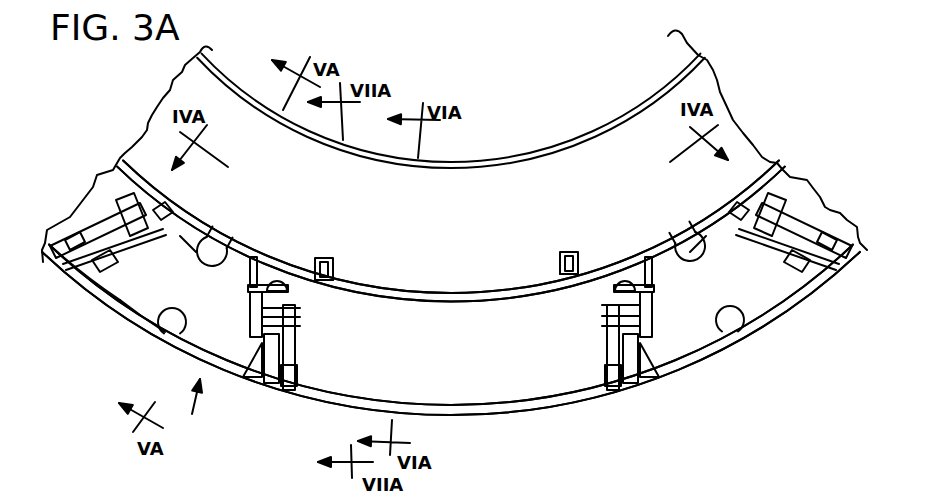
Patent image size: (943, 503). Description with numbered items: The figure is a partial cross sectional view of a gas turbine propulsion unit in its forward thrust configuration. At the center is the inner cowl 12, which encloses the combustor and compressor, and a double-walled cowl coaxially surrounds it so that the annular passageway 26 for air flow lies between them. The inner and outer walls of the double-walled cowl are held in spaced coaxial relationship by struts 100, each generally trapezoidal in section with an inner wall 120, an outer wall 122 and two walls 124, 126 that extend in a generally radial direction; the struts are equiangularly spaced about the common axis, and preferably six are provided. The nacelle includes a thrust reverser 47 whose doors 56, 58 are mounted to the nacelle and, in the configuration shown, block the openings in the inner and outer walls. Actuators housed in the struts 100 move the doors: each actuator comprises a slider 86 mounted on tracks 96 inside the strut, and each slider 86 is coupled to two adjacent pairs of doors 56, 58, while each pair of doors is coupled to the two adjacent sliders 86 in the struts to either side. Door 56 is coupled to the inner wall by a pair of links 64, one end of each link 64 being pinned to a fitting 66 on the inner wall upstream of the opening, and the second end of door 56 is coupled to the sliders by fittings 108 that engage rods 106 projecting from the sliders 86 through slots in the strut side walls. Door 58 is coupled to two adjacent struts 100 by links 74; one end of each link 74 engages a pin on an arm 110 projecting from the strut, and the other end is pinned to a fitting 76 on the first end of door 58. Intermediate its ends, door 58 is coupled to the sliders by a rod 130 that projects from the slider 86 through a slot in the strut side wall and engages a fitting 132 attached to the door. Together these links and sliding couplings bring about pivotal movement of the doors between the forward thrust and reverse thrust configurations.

The inner cowl 12 is at (462, 172).
The passageway 26 is at (462, 223).
The thrust reverser 47 is at (187, 411).
The door 56 is at (418, 292).
The door 58 is at (448, 407).
The link 64 is at (318, 258).
The fitting 66 is at (336, 262).
The link 74 is at (302, 340).
The fitting 76 is at (302, 368).
The slider 86 is at (200, 338).
The tracks 96 is at (213, 252).
The strut 100 is at (150, 335).
The rod 106 is at (301, 309).
The fitting 108 is at (293, 278).
The arm 110 is at (301, 319).
The inner wall 120 is at (207, 228).
The outer wall 122 is at (107, 311).
The wall 124 is at (300, 328).
The wall 126 is at (115, 217).
The rod 130 is at (245, 366).
The fitting 132 is at (293, 392).